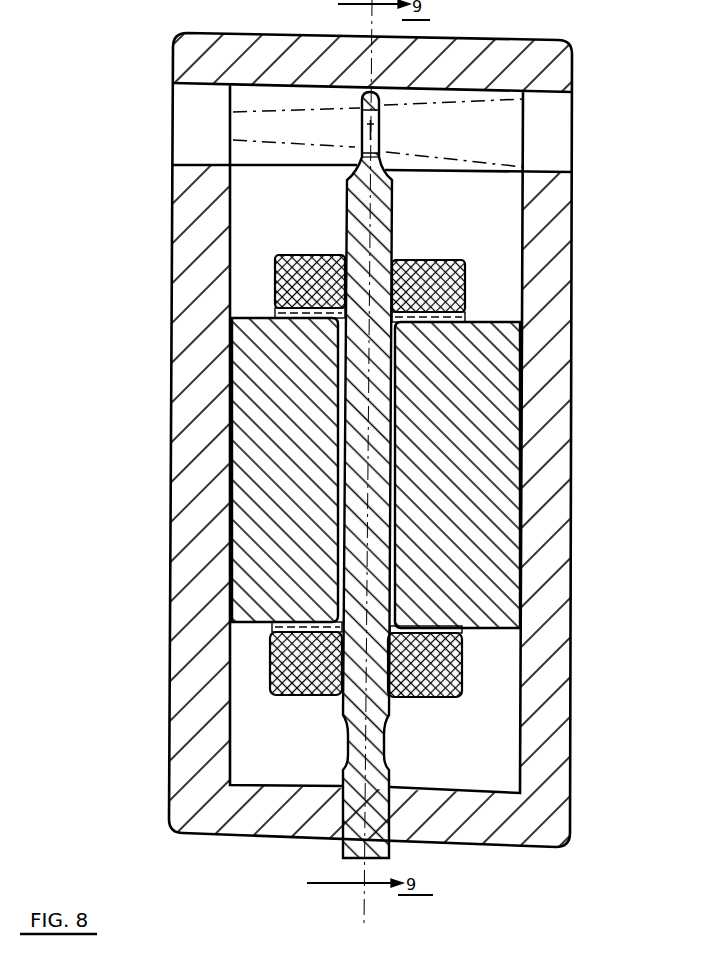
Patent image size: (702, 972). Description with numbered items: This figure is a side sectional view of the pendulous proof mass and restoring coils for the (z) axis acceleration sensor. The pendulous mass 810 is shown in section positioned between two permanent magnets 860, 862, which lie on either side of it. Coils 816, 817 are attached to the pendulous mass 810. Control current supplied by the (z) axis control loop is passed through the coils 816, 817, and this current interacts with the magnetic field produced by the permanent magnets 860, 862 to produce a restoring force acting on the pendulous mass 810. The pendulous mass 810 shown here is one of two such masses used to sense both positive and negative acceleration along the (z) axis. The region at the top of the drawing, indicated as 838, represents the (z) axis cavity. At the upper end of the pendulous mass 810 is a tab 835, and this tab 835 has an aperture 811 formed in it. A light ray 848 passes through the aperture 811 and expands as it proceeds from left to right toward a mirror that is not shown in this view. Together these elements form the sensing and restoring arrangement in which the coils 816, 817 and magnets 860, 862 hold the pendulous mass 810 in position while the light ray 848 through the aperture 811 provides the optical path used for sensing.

The (z) axis cavity 838 is at (553, 146).
The light ray 848 is at (289, 123).
The tab 835 is at (384, 88).
The aperture 811 is at (381, 128).
The pendulous mass 810 is at (384, 727).
The coil 817 is at (306, 255).
The coil 816 is at (424, 258).
The permanent magnet 860 is at (322, 463).
The permanent magnet 862 is at (488, 470).